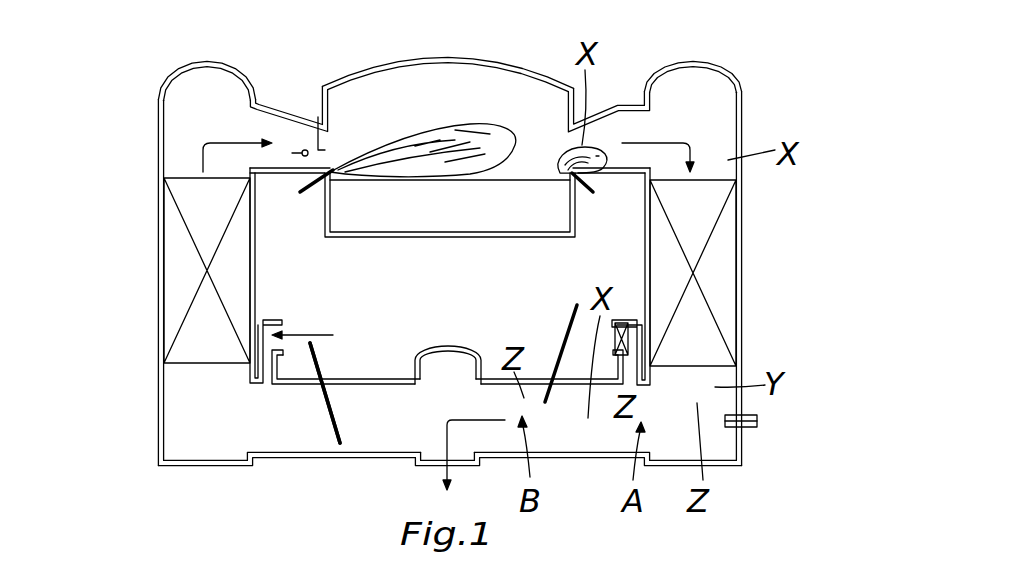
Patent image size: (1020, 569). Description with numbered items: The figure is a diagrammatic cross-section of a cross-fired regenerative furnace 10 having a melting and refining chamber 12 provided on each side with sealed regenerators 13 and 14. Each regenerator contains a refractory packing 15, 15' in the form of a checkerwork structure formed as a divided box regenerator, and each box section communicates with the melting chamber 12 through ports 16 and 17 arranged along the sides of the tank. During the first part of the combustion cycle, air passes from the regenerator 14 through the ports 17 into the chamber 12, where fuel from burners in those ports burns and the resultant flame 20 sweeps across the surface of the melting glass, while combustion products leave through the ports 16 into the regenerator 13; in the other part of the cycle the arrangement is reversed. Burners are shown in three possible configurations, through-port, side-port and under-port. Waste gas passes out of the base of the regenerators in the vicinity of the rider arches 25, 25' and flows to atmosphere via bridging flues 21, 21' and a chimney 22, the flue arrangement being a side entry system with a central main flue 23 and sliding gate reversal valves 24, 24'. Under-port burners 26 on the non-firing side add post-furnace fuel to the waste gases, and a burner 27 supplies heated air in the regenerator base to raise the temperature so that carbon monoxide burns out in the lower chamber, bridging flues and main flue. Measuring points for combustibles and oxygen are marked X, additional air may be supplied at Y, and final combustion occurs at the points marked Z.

The cross-fired regenerative furnace 10 is at (530, 66).
The melting and refining chamber 12 is at (408, 220).
The regenerator 13 is at (714, 67).
The regenerator 14 is at (182, 67).
The refractory packing 15 is at (730, 273).
The refractory packing 15' is at (163, 270).
The ports 16 is at (619, 137).
The ports 17 is at (277, 136).
The wick carrier 20 is at (432, 145).
The bridging flue 21 is at (549, 435).
The bridging flue 21' is at (330, 431).
The chimney 22 is at (436, 462).
The central main flue 23 is at (444, 377).
The sliding gate reversal valve 24 is at (544, 338).
The sliding gate reversal valve 24' is at (362, 386).
The rider arch 25 is at (706, 276).
The rider arch 25' is at (180, 275).
The burner 26 is at (587, 194).
The burner 27 is at (748, 428).